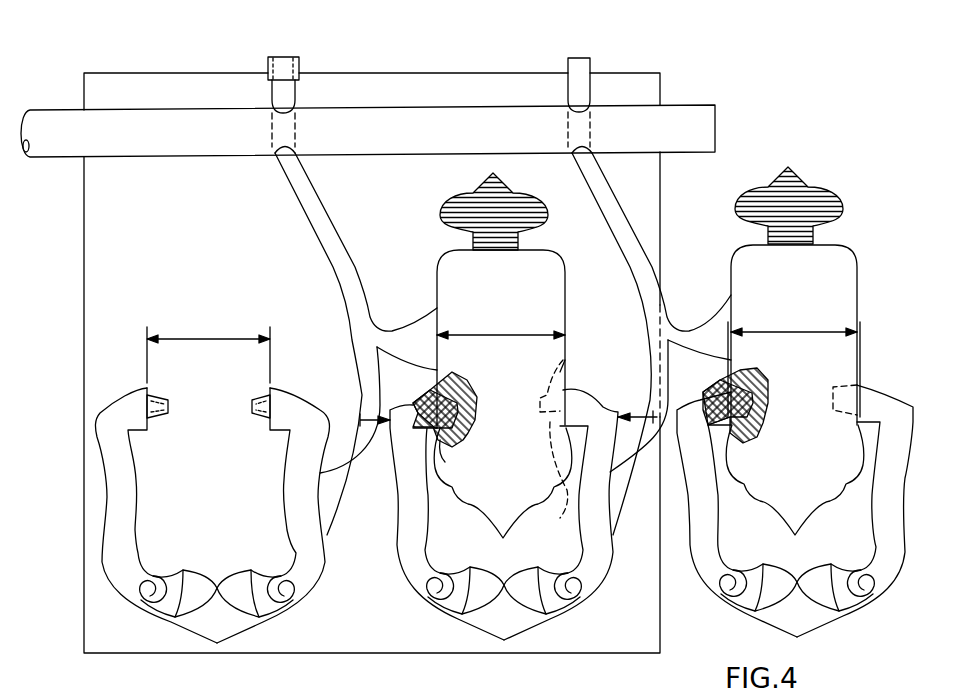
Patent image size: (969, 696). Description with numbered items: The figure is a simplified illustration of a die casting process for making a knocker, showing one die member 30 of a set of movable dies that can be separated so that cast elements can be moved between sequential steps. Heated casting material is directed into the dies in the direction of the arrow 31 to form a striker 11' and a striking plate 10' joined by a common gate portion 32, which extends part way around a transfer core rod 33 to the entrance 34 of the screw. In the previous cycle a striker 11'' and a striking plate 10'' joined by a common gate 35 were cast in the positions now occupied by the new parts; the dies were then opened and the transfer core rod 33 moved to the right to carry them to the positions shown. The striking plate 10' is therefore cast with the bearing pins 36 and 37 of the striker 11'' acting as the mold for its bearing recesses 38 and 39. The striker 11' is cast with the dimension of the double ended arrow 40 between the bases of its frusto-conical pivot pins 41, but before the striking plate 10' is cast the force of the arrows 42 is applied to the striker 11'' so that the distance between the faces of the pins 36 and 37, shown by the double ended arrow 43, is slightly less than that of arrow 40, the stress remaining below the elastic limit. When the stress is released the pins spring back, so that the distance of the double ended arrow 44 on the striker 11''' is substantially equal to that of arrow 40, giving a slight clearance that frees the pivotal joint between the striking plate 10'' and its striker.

The die member 30 is at (100, 648).
The arrow 31 is at (285, 18).
The gate portion 32 is at (320, 230).
The transfer core rod 33 is at (58, 120).
The entrance of the screw 34 is at (300, 62).
The common gate 35 is at (633, 280).
The bearing pin 36 is at (563, 365).
The bearing pin 37 is at (437, 392).
The bearing recess 38 is at (562, 458).
The bearing recess 39 is at (452, 452).
The double ended arrow 40 is at (226, 305).
The frusto-conical pivot pins 41 is at (163, 420).
The arrows 42 is at (362, 414).
The double ended arrow 43 is at (514, 312).
The double ended arrow 44 is at (788, 330).
The striking plate 10' is at (481, 300).
The striking plate 10'' is at (816, 296).
The striker 11' is at (229, 515).
The striker 11'' is at (523, 514).
The striker 11''' is at (800, 511).